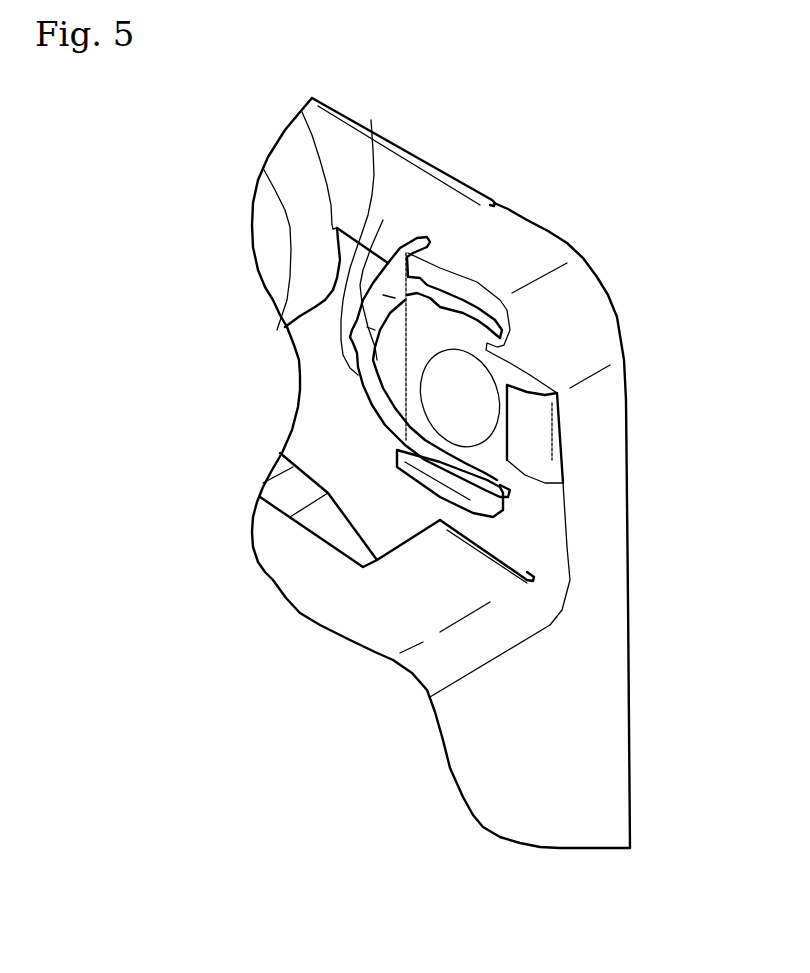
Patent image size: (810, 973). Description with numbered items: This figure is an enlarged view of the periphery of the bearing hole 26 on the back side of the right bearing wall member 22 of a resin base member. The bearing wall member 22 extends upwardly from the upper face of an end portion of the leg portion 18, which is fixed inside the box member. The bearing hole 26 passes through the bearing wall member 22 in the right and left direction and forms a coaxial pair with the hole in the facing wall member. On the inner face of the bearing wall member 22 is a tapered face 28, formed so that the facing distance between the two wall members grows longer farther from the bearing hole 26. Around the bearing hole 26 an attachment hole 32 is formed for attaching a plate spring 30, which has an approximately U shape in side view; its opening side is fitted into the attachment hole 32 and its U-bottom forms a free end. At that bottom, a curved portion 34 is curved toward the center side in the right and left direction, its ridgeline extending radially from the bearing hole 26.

The leg portion 18 is at (477, 473).
The bearing wall member 22 is at (450, 172).
The bearing hole 26 is at (539, 354).
The tapered face 28 is at (603, 434).
The plate spring 30 is at (390, 258).
The attachment hole 32 is at (546, 516).
The curved portion 34 is at (365, 222).